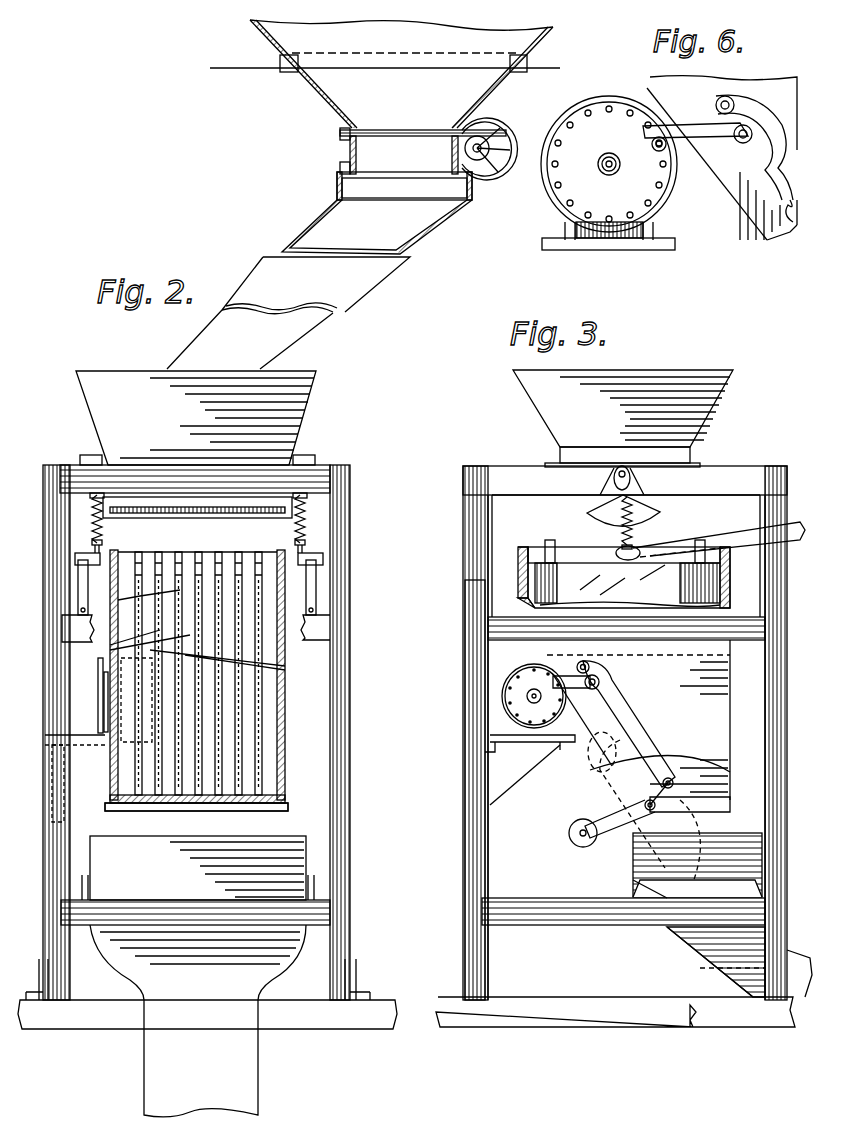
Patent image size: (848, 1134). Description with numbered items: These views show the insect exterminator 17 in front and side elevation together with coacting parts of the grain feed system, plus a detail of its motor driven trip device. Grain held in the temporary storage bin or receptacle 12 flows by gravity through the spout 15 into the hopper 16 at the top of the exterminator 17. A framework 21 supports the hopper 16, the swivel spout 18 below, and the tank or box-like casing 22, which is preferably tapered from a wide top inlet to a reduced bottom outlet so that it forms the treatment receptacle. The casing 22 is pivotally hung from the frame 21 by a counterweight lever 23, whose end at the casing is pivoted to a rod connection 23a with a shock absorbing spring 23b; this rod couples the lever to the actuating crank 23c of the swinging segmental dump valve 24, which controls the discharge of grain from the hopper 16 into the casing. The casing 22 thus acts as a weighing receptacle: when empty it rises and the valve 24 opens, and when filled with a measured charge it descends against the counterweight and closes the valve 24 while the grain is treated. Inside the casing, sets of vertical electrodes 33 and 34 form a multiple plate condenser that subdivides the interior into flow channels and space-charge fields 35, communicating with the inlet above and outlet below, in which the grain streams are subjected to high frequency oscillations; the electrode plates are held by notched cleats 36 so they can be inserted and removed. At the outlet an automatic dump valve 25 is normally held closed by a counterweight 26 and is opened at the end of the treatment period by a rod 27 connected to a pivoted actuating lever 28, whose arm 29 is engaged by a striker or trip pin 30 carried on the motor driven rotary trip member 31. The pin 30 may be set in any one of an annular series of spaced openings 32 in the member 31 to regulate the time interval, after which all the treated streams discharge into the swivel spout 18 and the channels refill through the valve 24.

In FIG. 2, the temporary storage bin or receptacle 12 is at (268, 34).
In FIG. 2, the spout 15 is at (262, 266).
In FIG. 2, the hopper 16 is at (300, 410).
In FIG. 3, the hopper 16 is at (540, 408).
In FIG. 2, the insect exterminator 17 is at (207, 747).
In FIG. 3, the insect exterminator 17 is at (623, 746).
In FIG. 2, the swivel spout 18 is at (145, 1060).
In FIG. 3, the swivel spout 18 is at (700, 960).
In FIG. 2, the framework 21 is at (45, 588).
In FIG. 3, the framework 21 is at (465, 607).
In FIG. 2, the casing 22 is at (286, 698).
In FIG. 3, the casing 22 is at (638, 720).
In FIG. 6, the casing 22 is at (738, 178).
In FIG. 2, the counterweight lever 23 is at (320, 562).
In FIG. 3, the counterweight lever 23 is at (735, 540).
In FIG. 2, the rod connection 23a is at (95, 538).
In FIG. 3, the rod connection 23a is at (616, 550).
In FIG. 2, the shock absorbing spring 23b is at (95, 510).
In FIG. 3, the shock absorbing spring 23b is at (640, 532).
In FIG. 3, the actuating crank 23c is at (640, 479).
In FIG. 3, the swinging segmental dump valve 24 is at (592, 518).
In FIG. 2, the automatic dump valve 25 is at (205, 815).
In FIG. 3, the automatic dump valve 25 is at (714, 806).
In FIG. 3, the counterweight 26 is at (583, 818).
In FIG. 2, the rod 27 is at (98, 705).
In FIG. 3, the rod 27 is at (640, 737).
In FIG. 6, the rod 27 is at (790, 212).
In FIG. 2, the pivoted actuating lever 28 is at (98, 675).
In FIG. 3, the pivoted actuating lever 28 is at (596, 668).
In FIG. 6, the pivoted actuating lever 28 is at (738, 140).
In FIG. 3, the arm 29 is at (556, 660).
In FIG. 6, the arm 29 is at (691, 155).
In FIG. 3, the striker or trip pin 30 is at (562, 698).
In FIG. 6, the striker or trip pin 30 is at (655, 150).
In FIG. 2, the motor driven rotary trip member 31 is at (104, 690).
In FIG. 3, the motor driven rotary trip member 31 is at (528, 680).
In FIG. 6, the motor driven rotary trip member 31 is at (609, 173).
In FIG. 3, the annular series of spaced openings 32 is at (505, 708).
In FIG. 6, the annular series of spaced openings 32 is at (605, 212).
In FIG. 2, the electrodes 33 is at (118, 600).
In FIG. 2, the electrodes 34 is at (110, 648).
In FIG. 2, the flow channels and space-charge fields 35 is at (230, 661).
In FIG. 2, the notched cleats 36 is at (248, 558).